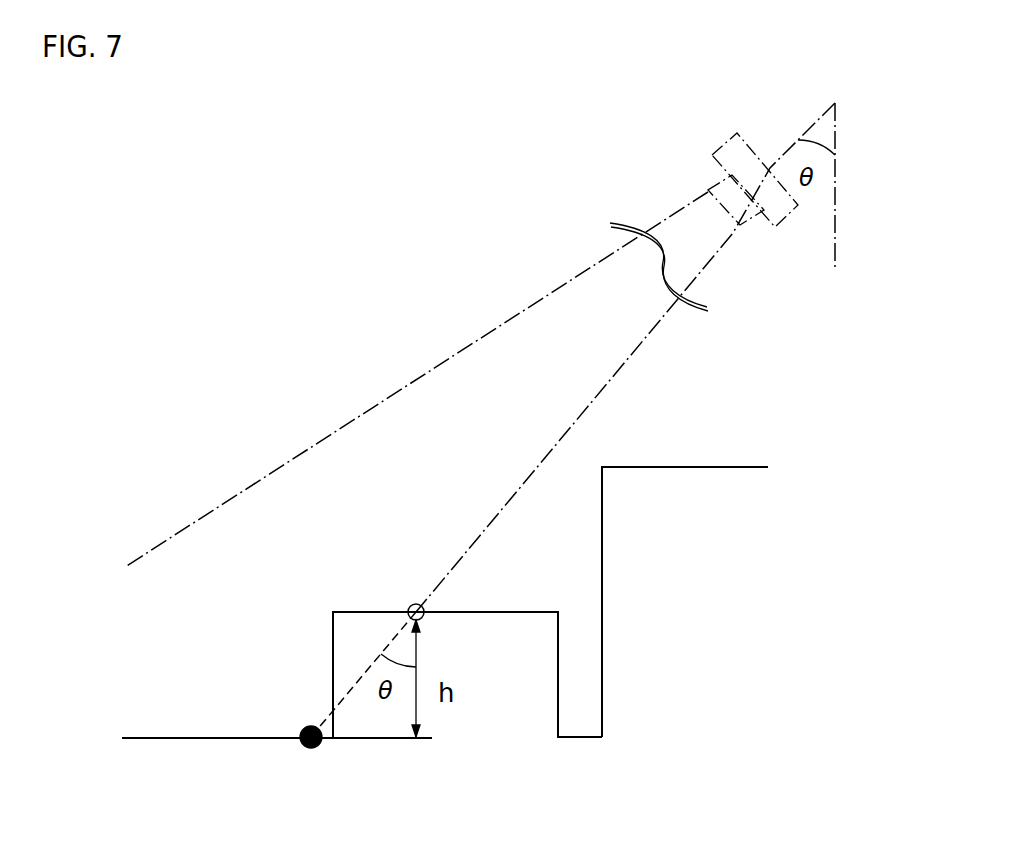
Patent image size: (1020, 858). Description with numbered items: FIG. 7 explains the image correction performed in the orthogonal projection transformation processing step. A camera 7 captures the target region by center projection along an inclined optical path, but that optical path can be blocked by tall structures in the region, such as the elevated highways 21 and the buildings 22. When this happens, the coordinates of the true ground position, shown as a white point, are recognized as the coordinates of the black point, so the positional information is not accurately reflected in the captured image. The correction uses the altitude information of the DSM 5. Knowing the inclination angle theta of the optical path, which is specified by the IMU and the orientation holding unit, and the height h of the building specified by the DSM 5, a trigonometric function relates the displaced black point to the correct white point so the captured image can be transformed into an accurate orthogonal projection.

The camera 7 is at (720, 147).
The buildings 22 is at (732, 465).
The elevated highways 21 is at (507, 612).
The DSM 5 is at (148, 737).